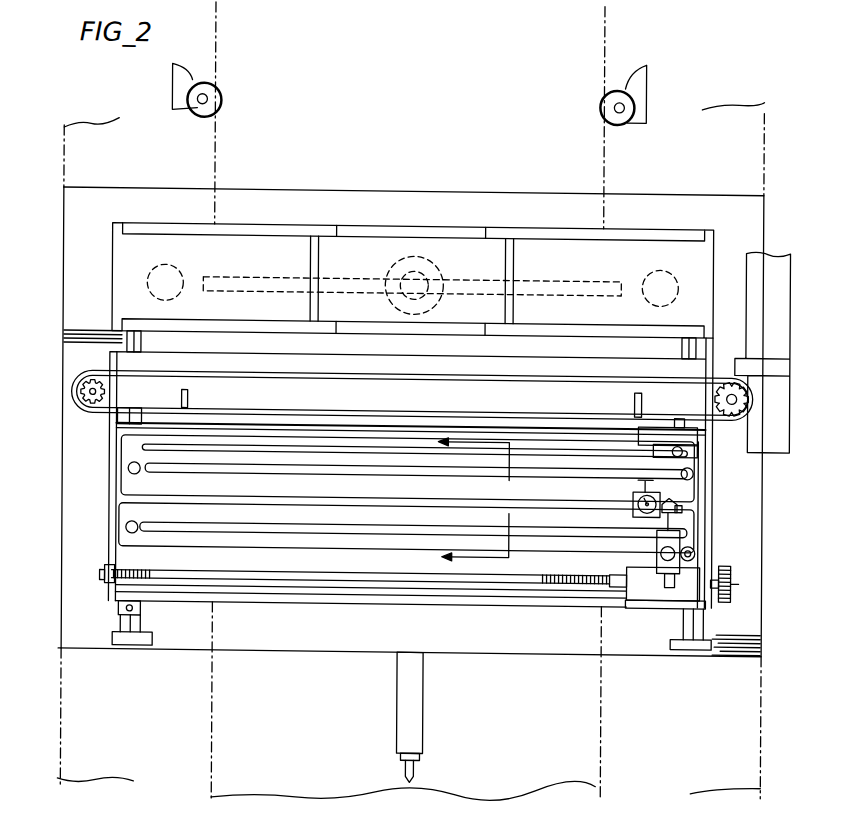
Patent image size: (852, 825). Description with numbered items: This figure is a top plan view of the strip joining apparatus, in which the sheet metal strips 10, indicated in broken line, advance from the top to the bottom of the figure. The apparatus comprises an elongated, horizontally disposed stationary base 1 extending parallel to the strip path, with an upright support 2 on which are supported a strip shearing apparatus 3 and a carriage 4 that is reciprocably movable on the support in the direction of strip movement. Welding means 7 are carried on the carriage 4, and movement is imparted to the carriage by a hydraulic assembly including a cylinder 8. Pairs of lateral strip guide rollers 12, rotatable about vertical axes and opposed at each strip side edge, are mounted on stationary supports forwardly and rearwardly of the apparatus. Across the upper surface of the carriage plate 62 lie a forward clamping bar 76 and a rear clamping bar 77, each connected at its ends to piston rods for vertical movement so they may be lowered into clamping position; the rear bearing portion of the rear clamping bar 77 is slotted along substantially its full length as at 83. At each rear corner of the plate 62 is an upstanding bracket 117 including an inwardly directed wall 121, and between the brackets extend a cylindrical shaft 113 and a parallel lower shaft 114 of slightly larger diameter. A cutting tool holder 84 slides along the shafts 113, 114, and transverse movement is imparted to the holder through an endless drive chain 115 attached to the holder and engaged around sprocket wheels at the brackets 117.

The stationary base 1 is at (45, 660).
The upright support 2 is at (55, 544).
The strip shearing apparatus 3 is at (174, 219).
The carriage 4 is at (82, 490).
The welding means 7 is at (744, 602).
The cylinder 8 is at (401, 707).
The sheet metal strips 10 is at (212, 684).
The lateral strip guide rollers 12 is at (220, 91).
The carriage plate 62 is at (330, 568).
The forward clamping bar 76 is at (184, 540).
The rear clamping bar 77 is at (132, 486).
The slot 83 is at (232, 450).
The cutting tool holder 84 is at (702, 430).
The cylindrical shaft 113 is at (120, 419).
The lower shaft 114 is at (114, 432).
The endless drive chain 115 is at (268, 410).
The upstanding bracket 117 is at (112, 360).
The inwardly directed wall 121 is at (172, 388).